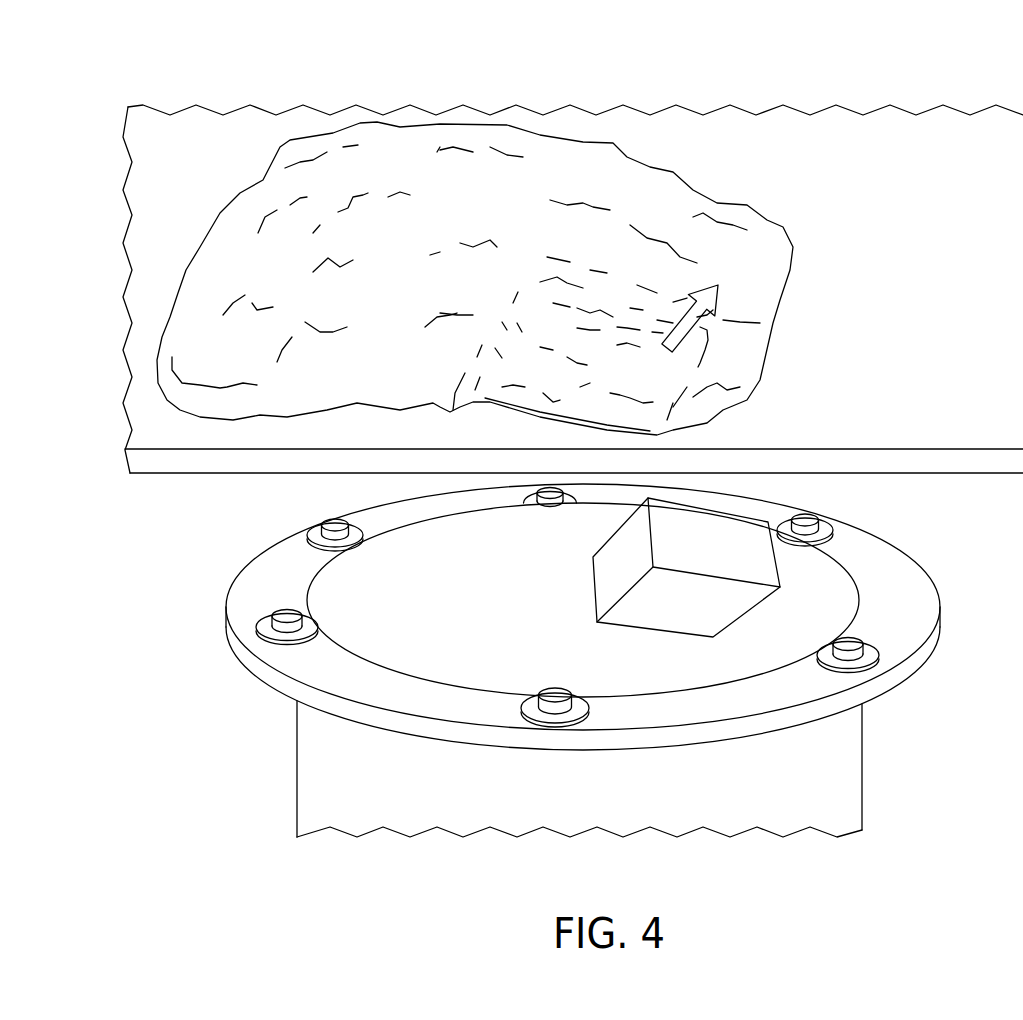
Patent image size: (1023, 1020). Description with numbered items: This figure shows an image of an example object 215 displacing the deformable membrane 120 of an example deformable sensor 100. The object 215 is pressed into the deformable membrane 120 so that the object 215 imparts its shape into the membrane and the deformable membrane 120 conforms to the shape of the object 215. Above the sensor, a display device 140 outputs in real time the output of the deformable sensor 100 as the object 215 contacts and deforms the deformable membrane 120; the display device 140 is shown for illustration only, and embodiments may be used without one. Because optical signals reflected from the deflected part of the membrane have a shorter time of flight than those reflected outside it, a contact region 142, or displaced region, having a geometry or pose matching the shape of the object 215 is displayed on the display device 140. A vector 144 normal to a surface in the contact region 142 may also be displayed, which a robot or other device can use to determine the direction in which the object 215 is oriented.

The deformable sensor 100 is at (583, 660).
The deformable membrane 120 is at (454, 589).
The display device 140 is at (573, 248).
The contact region 142 is at (475, 278).
The vector 144 is at (711, 295).
The object 215 is at (656, 567).